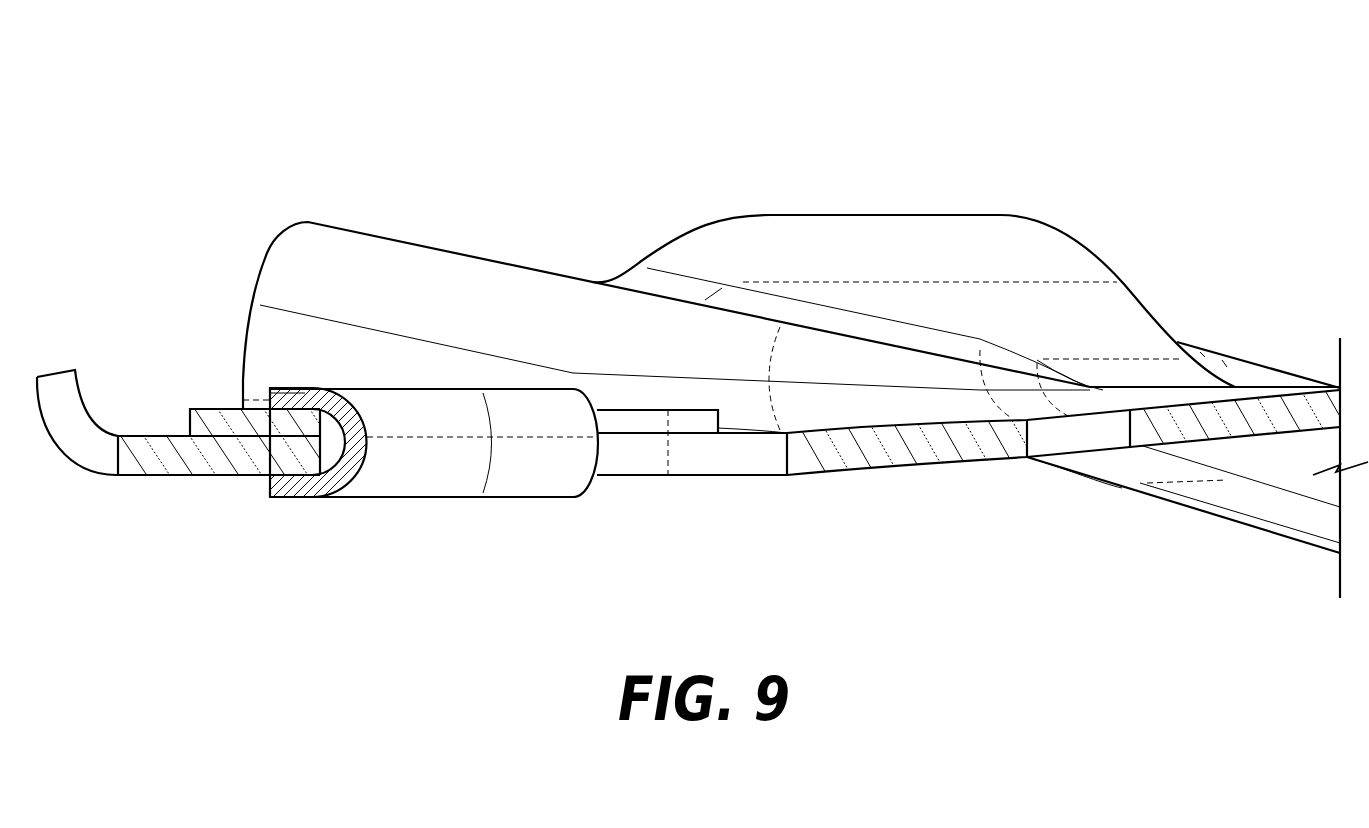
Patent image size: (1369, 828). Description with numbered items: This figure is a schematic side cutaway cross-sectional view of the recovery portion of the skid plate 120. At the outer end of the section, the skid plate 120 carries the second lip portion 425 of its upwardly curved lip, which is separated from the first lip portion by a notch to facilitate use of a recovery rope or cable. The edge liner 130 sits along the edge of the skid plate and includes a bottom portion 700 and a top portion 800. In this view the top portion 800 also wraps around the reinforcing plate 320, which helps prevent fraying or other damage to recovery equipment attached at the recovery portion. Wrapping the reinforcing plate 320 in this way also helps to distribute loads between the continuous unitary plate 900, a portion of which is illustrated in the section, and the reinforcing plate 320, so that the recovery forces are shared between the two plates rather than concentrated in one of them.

The skid plate 120 is at (426, 94).
The edge liner 130 is at (407, 480).
The bottom portion 700 is at (287, 497).
The reinforcing plate 320 is at (211, 418).
The continuous unitary plate 900 is at (175, 470).
The second lip portion 425 is at (53, 371).
The top portion 800 is at (293, 389).